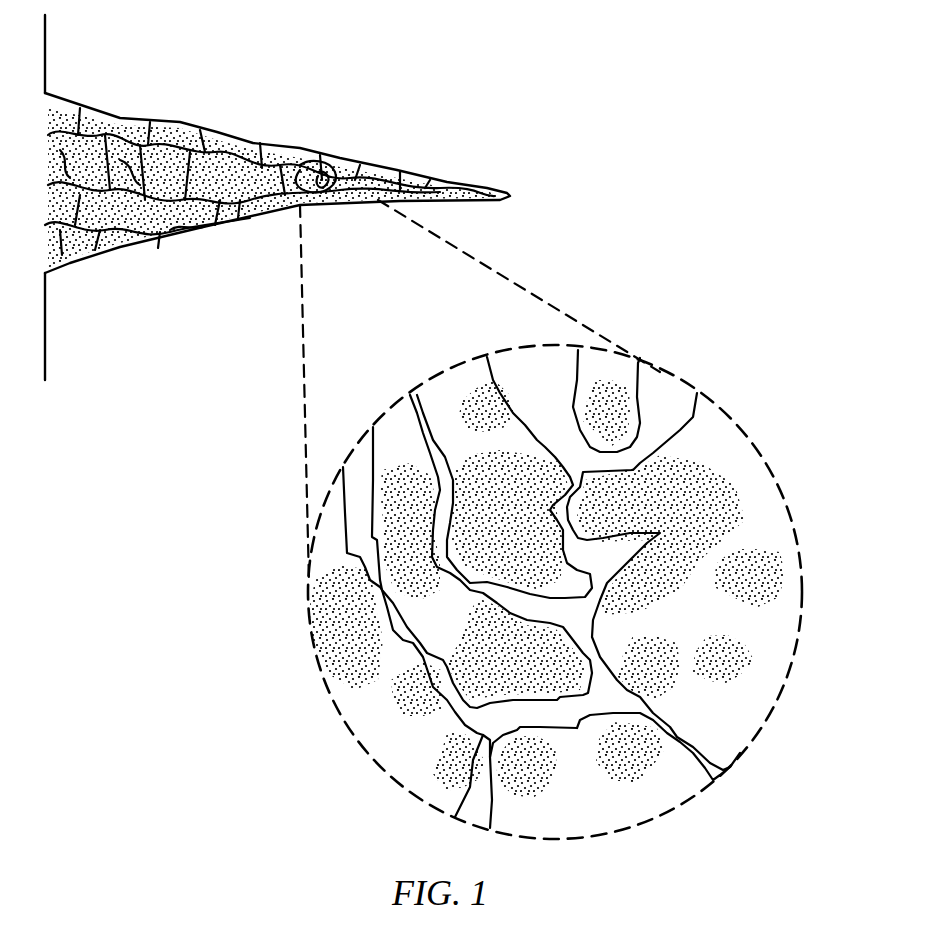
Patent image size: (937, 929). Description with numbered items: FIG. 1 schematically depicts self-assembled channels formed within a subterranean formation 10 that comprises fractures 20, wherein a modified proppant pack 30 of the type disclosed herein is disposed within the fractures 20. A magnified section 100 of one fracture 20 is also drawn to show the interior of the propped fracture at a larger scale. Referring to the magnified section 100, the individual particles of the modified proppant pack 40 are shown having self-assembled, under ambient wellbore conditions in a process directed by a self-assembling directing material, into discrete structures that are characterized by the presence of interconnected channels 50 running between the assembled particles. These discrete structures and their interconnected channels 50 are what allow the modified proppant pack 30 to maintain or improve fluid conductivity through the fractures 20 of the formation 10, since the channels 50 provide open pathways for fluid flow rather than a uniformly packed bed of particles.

The formation 10 is at (47, 47).
The fractures 20 is at (200, 228).
The modified proppant pack 30 is at (190, 148).
The individual particles of the modified proppant pack 40 is at (478, 395).
The interconnected channels 50 is at (665, 400).
The magnified section 100 is at (330, 160).